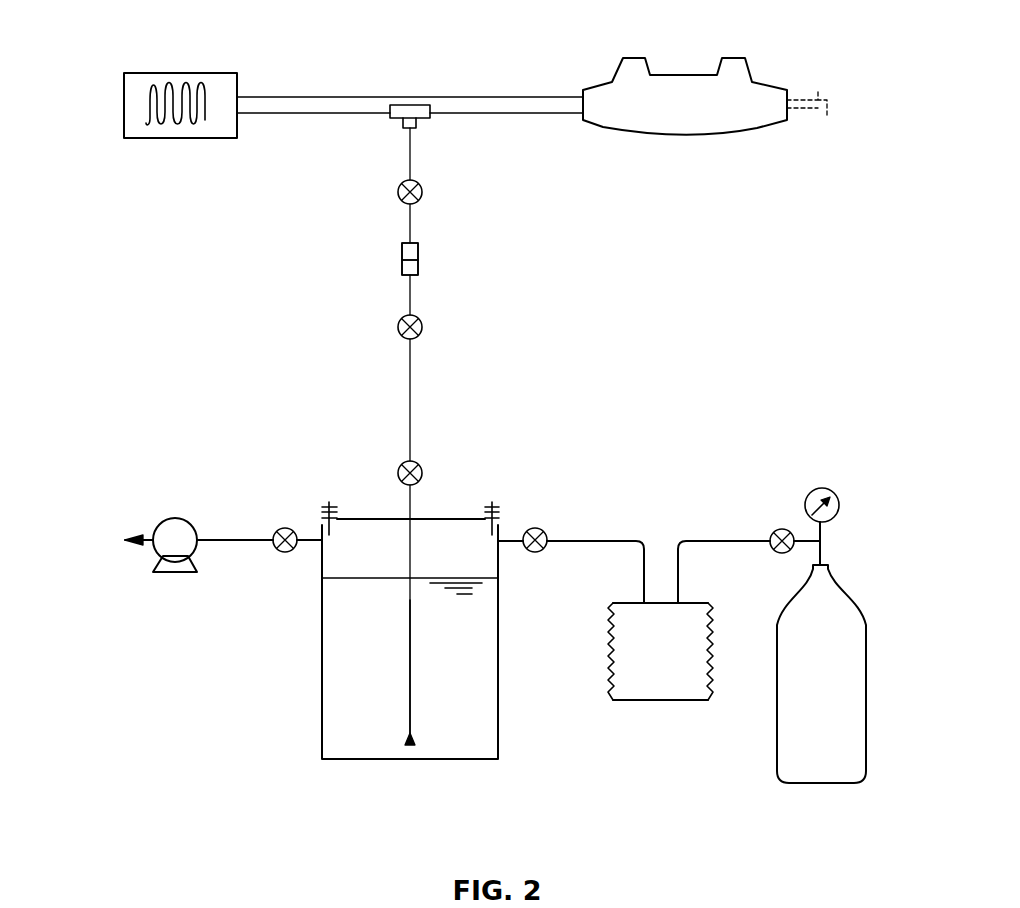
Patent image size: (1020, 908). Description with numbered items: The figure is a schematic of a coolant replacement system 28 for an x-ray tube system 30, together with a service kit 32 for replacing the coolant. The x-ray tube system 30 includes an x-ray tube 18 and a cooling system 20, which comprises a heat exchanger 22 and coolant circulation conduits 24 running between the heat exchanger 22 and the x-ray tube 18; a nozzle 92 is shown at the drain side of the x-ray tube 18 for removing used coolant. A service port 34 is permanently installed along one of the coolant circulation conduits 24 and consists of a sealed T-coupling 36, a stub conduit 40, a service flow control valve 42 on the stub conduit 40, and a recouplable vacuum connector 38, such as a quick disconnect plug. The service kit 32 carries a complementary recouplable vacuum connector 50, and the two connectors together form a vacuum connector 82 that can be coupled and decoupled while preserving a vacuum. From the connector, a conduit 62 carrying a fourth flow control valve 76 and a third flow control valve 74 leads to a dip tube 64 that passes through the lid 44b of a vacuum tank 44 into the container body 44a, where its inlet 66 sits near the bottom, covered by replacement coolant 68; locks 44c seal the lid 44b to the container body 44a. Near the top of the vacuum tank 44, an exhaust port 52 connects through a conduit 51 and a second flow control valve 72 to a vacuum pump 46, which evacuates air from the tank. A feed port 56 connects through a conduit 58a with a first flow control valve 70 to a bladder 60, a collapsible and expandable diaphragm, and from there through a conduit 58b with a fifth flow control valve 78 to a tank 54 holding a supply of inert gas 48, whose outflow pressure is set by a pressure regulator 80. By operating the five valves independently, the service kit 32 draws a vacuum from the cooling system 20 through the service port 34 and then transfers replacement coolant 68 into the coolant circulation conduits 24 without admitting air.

The x-ray tube 18 is at (685, 75).
The cooling system 20 is at (205, 140).
The heat exchanger 22 is at (180, 117).
The coolant circulation conduits 24 is at (270, 112).
The coolant replacement system 28 is at (148, 240).
The x-ray tube system 30 is at (135, 117).
The service kit 32 is at (318, 347).
The service port 34 is at (385, 152).
The coupling 36 is at (410, 105).
The recouplable vacuum connector 38 is at (402, 250).
The stub conduit 40 is at (412, 152).
The service flow control valve 42 is at (423, 192).
The vacuum tank 44 is at (390, 644).
The container body 44a is at (322, 718).
The lid 44b is at (377, 519).
The locks 44c is at (325, 503).
The vacuum pump 46 is at (175, 530).
The supply of inert gas 48 is at (822, 790).
The recouplable vacuum connector 50 is at (402, 268).
The conduit 51 is at (237, 540).
The exhaust port 52 is at (322, 548).
The tank 54 is at (846, 702).
The feed port 56 is at (500, 538).
The conduit 58a is at (622, 541).
The conduit 58b is at (697, 541).
The bladder 60 is at (660, 700).
The conduit 62 is at (412, 398).
The dip tube 64 is at (408, 655).
The inlet 66 is at (410, 745).
The replacement coolant 68 is at (410, 620).
The first flow control valve 70 is at (550, 541).
The second flow control valve 72 is at (285, 528).
The third flow control valve 74 is at (423, 473).
The fourth flow control valve 76 is at (423, 327).
The fifth flow control valve 78 is at (782, 528).
The pressure regulator 80 is at (820, 488).
The vacuum connector 82 is at (425, 260).
The nozzle 92 is at (820, 92).